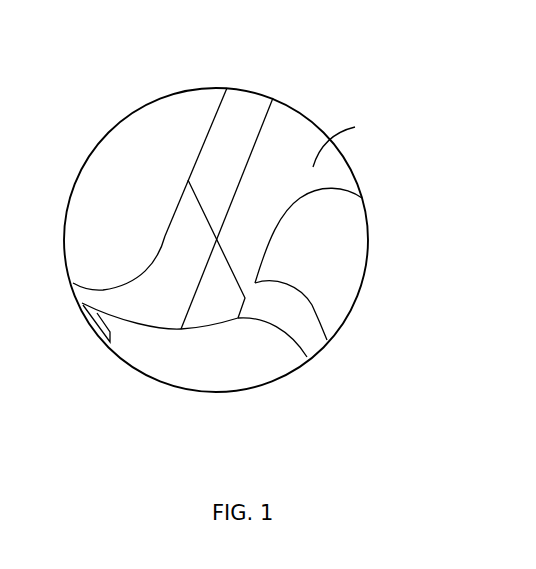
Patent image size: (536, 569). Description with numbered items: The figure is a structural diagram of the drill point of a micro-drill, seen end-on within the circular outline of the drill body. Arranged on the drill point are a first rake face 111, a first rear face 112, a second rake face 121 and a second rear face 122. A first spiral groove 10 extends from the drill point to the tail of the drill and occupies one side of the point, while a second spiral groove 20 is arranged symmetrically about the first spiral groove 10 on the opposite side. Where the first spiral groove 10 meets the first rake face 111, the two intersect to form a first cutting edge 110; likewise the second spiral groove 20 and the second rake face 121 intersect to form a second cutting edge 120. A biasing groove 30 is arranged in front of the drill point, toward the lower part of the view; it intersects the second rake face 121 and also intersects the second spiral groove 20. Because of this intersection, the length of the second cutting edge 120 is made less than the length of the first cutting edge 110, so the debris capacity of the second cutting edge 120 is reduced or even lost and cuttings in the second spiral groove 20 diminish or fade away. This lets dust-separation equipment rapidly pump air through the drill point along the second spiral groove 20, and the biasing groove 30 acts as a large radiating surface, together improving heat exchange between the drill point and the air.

The first spiral groove 10 is at (123, 178).
The first cutting edge 110 is at (207, 138).
The first rake face 111 is at (238, 122).
The first rear face 112 is at (355, 127).
The second spiral groove 20 is at (350, 270).
The second cutting edge 120 is at (307, 357).
The second rake face 121 is at (208, 307).
The second rear face 122 is at (160, 305).
The biasing groove 30 is at (247, 358).